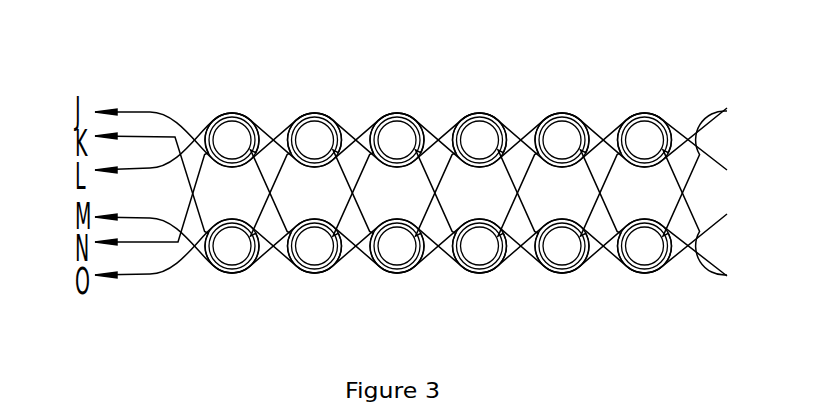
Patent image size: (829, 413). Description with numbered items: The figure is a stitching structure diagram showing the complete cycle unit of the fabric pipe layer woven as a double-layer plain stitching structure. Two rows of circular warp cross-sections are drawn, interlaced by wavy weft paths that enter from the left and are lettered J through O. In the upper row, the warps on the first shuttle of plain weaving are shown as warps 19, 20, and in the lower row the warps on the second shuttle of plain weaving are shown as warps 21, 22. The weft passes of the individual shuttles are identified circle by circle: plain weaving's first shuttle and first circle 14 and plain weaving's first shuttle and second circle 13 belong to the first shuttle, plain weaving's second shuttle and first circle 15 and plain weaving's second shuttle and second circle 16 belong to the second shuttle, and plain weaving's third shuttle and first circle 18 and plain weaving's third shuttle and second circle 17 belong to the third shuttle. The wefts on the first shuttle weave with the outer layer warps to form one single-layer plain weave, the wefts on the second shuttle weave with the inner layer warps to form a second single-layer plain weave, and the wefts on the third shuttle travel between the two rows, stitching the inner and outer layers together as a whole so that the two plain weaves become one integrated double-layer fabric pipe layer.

The plain weaving's first shuttle and second circle 13 is at (229, 90).
The plain weaving's first shuttle and first circle 14 is at (309, 90).
The plain weaving's second shuttle and first circle 15 is at (221, 299).
The plain weaving's second shuttle and second circle 16 is at (309, 299).
The plain weaving's third shuttle and second circle 17 is at (336, 272).
The plain weaving's third shuttle and first circle 18 is at (399, 292).
The warp on the first shuttle of plain weaving 19 is at (400, 116).
The warp on the first shuttle of plain weaving 20 is at (488, 117).
The warp on the second shuttle of plain weaving 21 is at (483, 270).
The warp on the second shuttle of plain weaving 22 is at (563, 269).